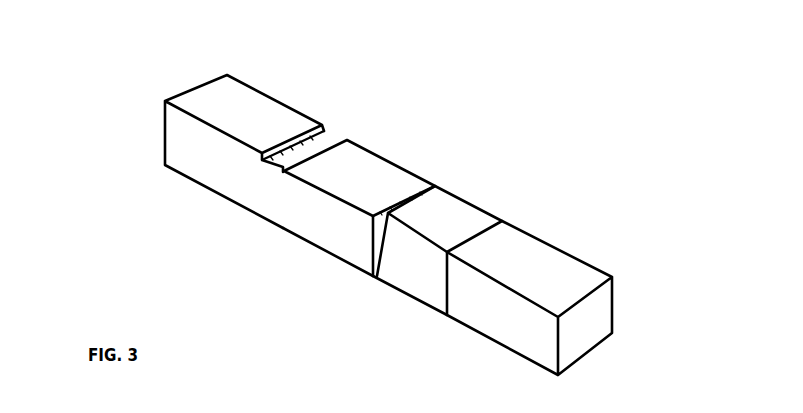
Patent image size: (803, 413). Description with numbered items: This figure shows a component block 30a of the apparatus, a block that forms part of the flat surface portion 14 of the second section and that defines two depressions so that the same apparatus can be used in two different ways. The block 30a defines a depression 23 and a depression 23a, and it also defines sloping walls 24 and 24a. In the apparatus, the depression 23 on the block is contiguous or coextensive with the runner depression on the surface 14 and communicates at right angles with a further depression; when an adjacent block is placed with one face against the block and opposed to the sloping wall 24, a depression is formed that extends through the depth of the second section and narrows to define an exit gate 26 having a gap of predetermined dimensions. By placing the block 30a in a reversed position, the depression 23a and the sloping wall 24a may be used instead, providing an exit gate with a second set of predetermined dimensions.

The flat surface portion 14 is at (213, 93).
The depression 23 is at (475, 220).
The depression 23a is at (312, 147).
The sloping wall 24 is at (415, 260).
The sloping wall 24a is at (322, 142).
The exit gate 26 is at (430, 306).
The component block 30a is at (593, 316).